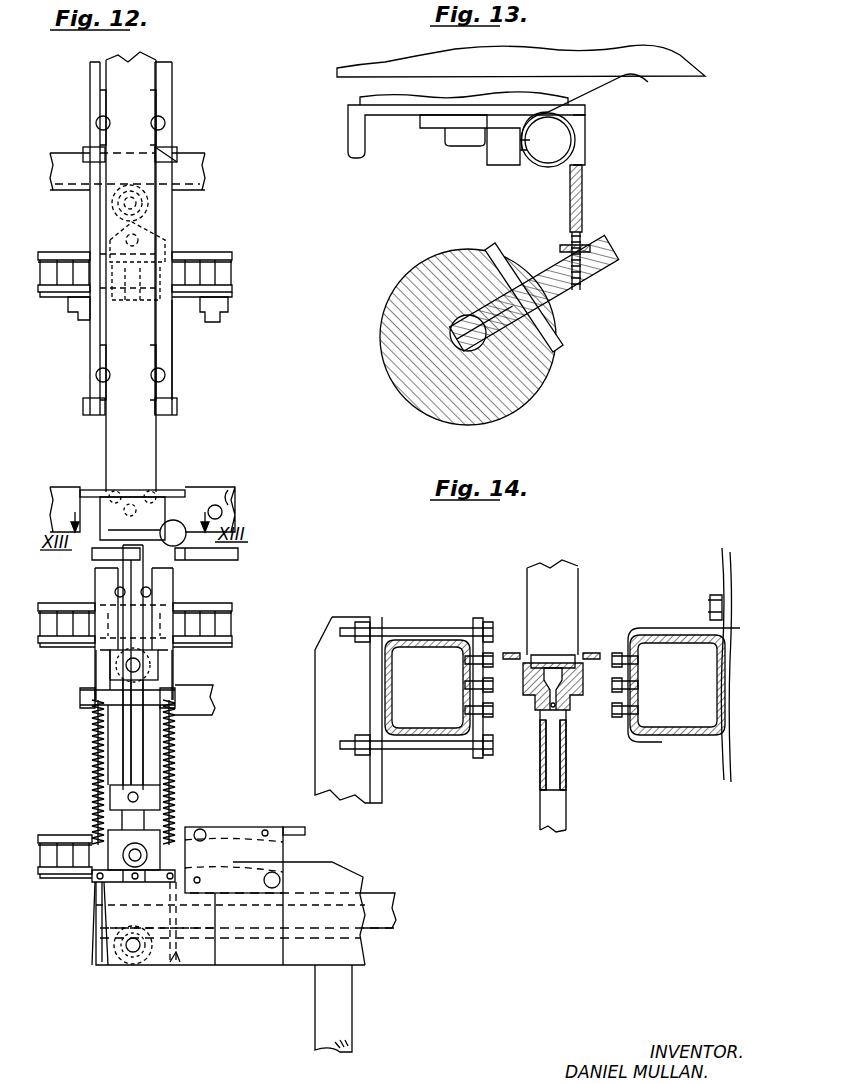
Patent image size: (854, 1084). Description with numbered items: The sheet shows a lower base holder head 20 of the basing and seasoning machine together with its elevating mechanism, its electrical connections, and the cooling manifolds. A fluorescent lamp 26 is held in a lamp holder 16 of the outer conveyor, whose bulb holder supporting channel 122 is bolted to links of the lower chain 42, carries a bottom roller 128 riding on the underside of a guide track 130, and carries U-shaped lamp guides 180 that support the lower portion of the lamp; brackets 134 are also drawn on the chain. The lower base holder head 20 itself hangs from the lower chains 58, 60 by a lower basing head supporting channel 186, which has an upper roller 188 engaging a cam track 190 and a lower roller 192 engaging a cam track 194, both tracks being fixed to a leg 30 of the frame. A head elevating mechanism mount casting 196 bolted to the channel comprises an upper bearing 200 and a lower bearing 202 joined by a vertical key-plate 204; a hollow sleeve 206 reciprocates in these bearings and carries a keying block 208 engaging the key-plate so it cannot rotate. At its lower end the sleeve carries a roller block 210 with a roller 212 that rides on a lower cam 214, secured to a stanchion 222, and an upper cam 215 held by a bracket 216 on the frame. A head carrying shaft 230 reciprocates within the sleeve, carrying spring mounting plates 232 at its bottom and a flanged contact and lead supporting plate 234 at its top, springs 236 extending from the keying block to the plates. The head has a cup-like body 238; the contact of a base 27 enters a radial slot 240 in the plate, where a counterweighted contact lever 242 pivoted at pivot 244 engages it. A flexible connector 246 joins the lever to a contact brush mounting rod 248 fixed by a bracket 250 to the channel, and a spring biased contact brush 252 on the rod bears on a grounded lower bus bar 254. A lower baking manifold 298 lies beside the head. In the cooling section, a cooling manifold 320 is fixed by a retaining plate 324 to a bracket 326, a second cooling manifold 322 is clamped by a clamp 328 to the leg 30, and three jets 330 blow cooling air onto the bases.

In FIG. 12, the lamp holder 16 is at (178, 349).
In FIG. 12, the lower base holder head 20 is at (185, 670).
In FIG. 12, the fluorescent lamp 26 is at (158, 445).
In FIG. 14, the fluorescent lamp 26 is at (575, 575).
In FIG. 14, the base 27 is at (558, 655).
In FIG. 14, the vertical leg 30 is at (722, 750).
In FIG. 12, the lower chain 42 is at (220, 250).
In FIG. 12, the lower chain 58 is at (225, 622).
In FIG. 12, the lower chain 60 is at (50, 836).
In FIG. 12, the bulb holder supporting channel 122 is at (172, 80).
In FIG. 12, the bottom roller 128 is at (149, 204).
In FIG. 12, the guide track 130 is at (195, 170).
In FIG. 12, the chain brackets 134 is at (76, 305).
In FIG. 12, the lamp guide 180 is at (170, 150).
In FIG. 12, the lower basing head supporting channel 186 is at (110, 594).
In FIG. 13, the lower basing head supporting channel 186 is at (385, 112).
In FIG. 12, the upper roller 188 is at (100, 655).
In FIG. 12, the cam track 190 is at (215, 696).
In FIG. 12, the lower roller 192 is at (118, 965).
In FIG. 12, the cam track 194 is at (395, 900).
In FIG. 12, the head elevating mechanism mount casting 196 is at (148, 760).
In FIG. 12, the upper bearing 200 is at (158, 657).
In FIG. 12, the lower bearing 202 is at (160, 798).
In FIG. 12, the vertical key-plate 204 is at (133, 740).
In FIG. 12, the hollow sleeve 206 is at (140, 606).
In FIG. 14, the hollow sleeve 206 is at (566, 815).
In FIG. 12, the keying block 208 is at (95, 712).
In FIG. 12, the roller block 210 is at (110, 833).
In FIG. 12, the roller 212 is at (150, 875).
In FIG. 12, the lower cam 214 is at (340, 880).
In FIG. 12, the upper cam 215 is at (290, 826).
In FIG. 12, the bracket 216 is at (280, 850).
In FIG. 12, the stanchion 222 is at (352, 1000).
In FIG. 12, the head carrying shaft 230 is at (125, 568).
In FIG. 14, the head carrying shaft 230 is at (560, 778).
In FIG. 12, the spring mounting plate 232 is at (96, 886).
In FIG. 12, the flanged contact and lead supporting plate 234 is at (145, 497).
In FIG. 13, the flanged contact and lead supporting plate 234 is at (530, 387).
In FIG. 14, the flanged contact and lead supporting plate 234 is at (538, 715).
In FIG. 12, the spring 236 is at (92, 748).
In FIG. 12, the cup-like body 238 is at (90, 490).
In FIG. 14, the cup-like body 238 is at (512, 650).
In FIG. 13, the radial slot 240 is at (452, 336).
In FIG. 12, the counterweighted contact lever 242 is at (185, 520).
In FIG. 13, the counterweighted contact lever 242 is at (622, 252).
In FIG. 14, the counterweighted contact lever 242 is at (565, 712).
In FIG. 13, the pivot 244 is at (550, 342).
In FIG. 13, the flexible connector 246 is at (590, 228).
In FIG. 13, the contact brush mounting rod 248 is at (548, 165).
In FIG. 13, the bracket 250 is at (490, 135).
In FIG. 12, the contact brush 252 is at (200, 560).
In FIG. 13, the contact brush 252 is at (605, 92).
In FIG. 12, the lower bus bar 254 is at (100, 555).
In FIG. 13, the lower bus bar 254 is at (645, 58).
In FIG. 12, the lower baking manifold 298 is at (235, 490).
In FIG. 14, the cooling manifold 320 is at (413, 645).
In FIG. 14, the cooling manifold 322 is at (675, 655).
In FIG. 14, the retaining plate 324 is at (478, 758).
In FIG. 14, the bracket 326 is at (360, 790).
In FIG. 14, the clamp 328 is at (640, 625).
In FIG. 14, the jet 330 is at (495, 665).